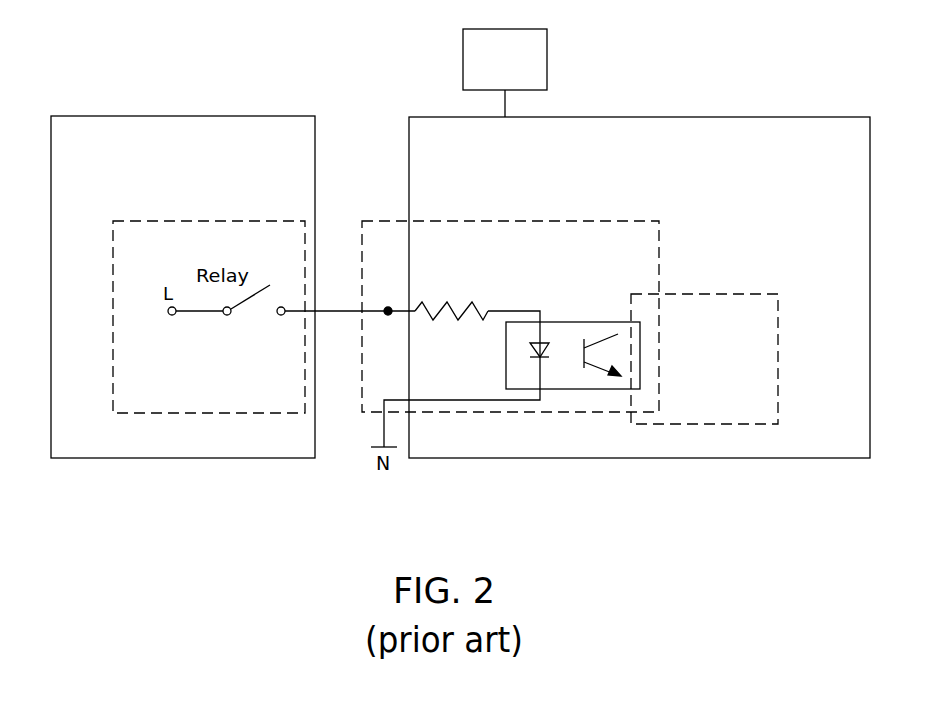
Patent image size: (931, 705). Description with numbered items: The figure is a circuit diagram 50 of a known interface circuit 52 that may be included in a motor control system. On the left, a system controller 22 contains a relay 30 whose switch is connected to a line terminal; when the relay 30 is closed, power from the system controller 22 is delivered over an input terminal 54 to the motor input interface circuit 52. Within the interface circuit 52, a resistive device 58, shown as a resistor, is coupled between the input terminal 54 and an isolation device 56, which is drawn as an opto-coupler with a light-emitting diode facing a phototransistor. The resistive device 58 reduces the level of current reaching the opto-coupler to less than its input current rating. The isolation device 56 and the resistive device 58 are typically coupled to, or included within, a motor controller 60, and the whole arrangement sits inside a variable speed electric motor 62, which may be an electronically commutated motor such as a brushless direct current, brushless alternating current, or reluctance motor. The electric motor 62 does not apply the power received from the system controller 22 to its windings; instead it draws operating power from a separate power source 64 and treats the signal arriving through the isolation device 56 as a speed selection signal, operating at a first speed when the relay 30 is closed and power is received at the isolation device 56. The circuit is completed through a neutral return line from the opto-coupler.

The system controller 22 is at (239, 116).
The relay 30 is at (245, 221).
The circuit diagram 50 is at (697, 95).
The interface circuit 52 is at (583, 221).
The input terminal 54 is at (328, 307).
The isolation device 56 is at (590, 320).
The resistive device 58 is at (478, 306).
The motor controller 60 is at (743, 294).
The variable speed electric motor 62 is at (643, 117).
The power source 64 is at (547, 35).